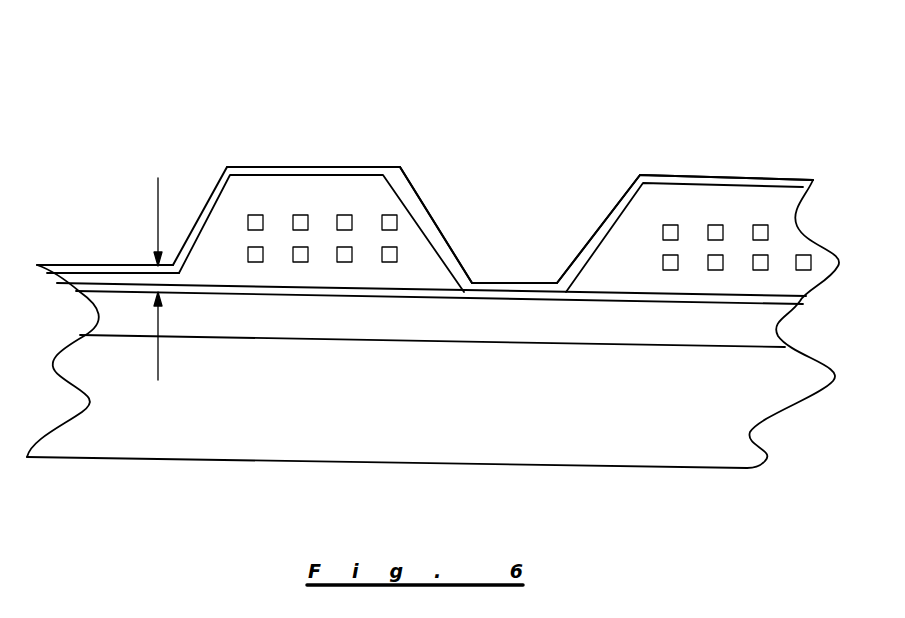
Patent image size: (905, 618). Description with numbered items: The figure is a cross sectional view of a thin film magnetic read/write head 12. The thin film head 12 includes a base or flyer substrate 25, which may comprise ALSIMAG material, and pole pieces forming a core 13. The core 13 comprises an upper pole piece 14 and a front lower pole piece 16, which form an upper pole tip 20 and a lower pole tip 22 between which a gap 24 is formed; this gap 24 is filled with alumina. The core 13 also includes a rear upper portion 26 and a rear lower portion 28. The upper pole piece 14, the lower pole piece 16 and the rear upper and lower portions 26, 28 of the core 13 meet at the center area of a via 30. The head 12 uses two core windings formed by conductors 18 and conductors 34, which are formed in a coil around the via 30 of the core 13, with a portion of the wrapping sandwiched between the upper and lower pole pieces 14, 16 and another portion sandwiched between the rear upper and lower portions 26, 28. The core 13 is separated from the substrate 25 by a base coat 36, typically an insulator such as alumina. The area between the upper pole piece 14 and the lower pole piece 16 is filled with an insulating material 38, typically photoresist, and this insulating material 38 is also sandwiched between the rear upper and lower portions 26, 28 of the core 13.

The thin film magnetic head 12 is at (133, 95).
The core 13 is at (430, 194).
The upper pole piece 14 is at (247, 170).
The lower pole piece 16 is at (278, 293).
The conductors 18 is at (390, 222).
The upper pole tip 20 is at (76, 265).
The lower pole tip 22 is at (86, 301).
The gap 24 is at (155, 278).
The flyer substrate 25 is at (242, 437).
The rear upper portion 26 is at (748, 180).
The rear lower portion 28 is at (760, 303).
The via 30 is at (536, 283).
The conductors 34 is at (389, 258).
The base coat 36 is at (128, 315).
The insulating material 38 is at (390, 195).